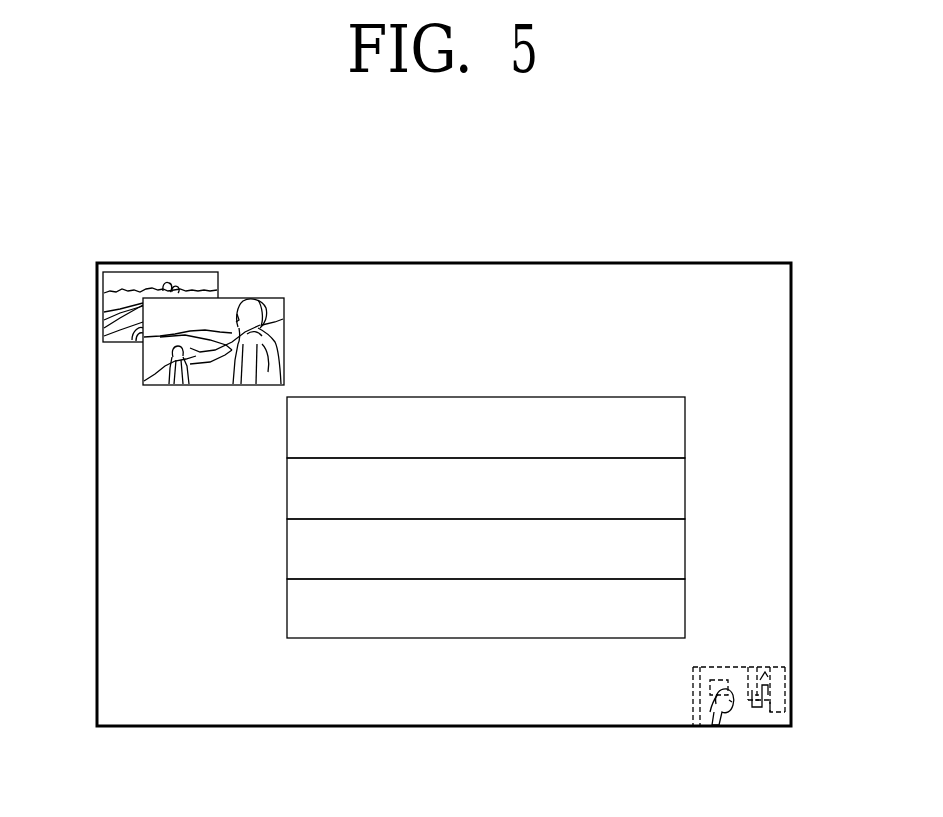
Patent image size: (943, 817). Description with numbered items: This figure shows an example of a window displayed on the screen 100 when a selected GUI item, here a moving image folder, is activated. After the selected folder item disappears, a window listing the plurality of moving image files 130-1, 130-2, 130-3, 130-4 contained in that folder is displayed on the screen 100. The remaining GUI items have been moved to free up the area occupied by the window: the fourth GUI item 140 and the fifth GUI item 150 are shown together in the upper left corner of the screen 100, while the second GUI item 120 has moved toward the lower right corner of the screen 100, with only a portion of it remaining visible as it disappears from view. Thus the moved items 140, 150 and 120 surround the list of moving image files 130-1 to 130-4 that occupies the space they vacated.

The screen 100 is at (662, 263).
The fifth GUI item 150 is at (129, 291).
The fourth GUI item 140 is at (244, 327).
The moving image file 130-1 is at (674, 427).
The moving image file 130-2 is at (674, 487).
The moving image file 130-3 is at (674, 544).
The moving image file 130-4 is at (674, 603).
The second GUI item 120 is at (777, 667).